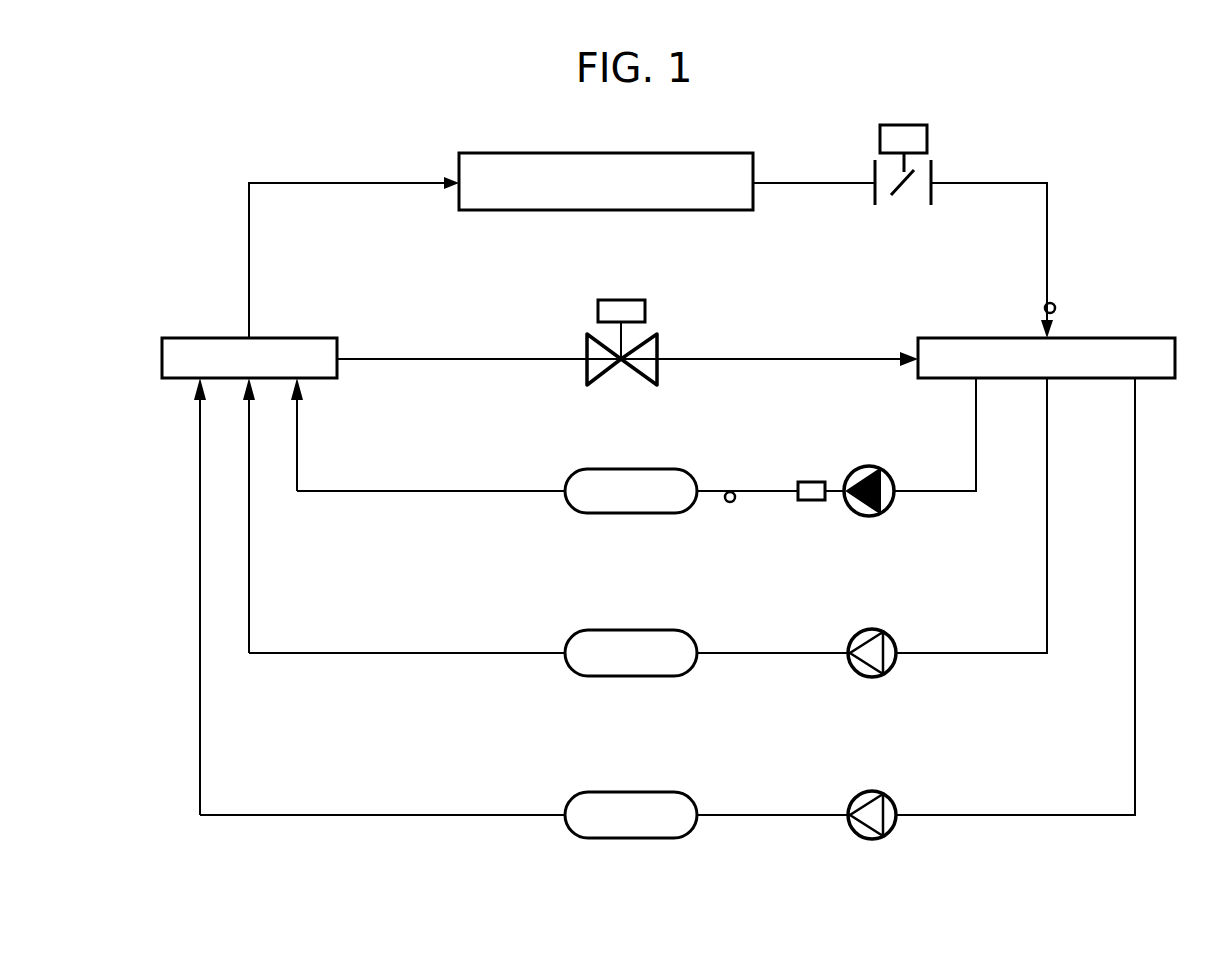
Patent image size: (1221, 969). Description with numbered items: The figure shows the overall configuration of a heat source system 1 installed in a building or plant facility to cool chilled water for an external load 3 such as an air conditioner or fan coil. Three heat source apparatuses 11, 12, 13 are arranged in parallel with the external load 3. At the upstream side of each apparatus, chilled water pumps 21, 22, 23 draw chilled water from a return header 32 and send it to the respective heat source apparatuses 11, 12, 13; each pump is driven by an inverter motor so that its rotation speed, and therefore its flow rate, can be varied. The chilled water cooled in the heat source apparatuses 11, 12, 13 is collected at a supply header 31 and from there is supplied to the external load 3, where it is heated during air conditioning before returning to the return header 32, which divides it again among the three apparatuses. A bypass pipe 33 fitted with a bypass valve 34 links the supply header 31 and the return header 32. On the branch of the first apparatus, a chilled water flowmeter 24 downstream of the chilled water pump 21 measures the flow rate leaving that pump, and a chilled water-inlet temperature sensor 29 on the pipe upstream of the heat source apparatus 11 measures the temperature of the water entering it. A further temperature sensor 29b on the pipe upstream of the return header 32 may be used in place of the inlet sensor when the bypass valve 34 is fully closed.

The heat source system 1 is at (203, 196).
The external load 3 is at (753, 165).
The heat source apparatus 11 is at (573, 474).
The heat source apparatus 12 is at (573, 636).
The heat source apparatus 13 is at (573, 800).
The chilled water pump 21 is at (893, 500).
The chilled water pump 22 is at (893, 668).
The chilled water pump 23 is at (893, 830).
The chilled water flowmeter 24 is at (812, 502).
The chilled water-inlet temperature sensor 29 is at (732, 504).
The temperature sensor 29b is at (1056, 306).
The supply header 31 is at (220, 336).
The return header 32 is at (1153, 380).
The bypass pipe 33 is at (838, 356).
The bypass valve 34 is at (588, 346).